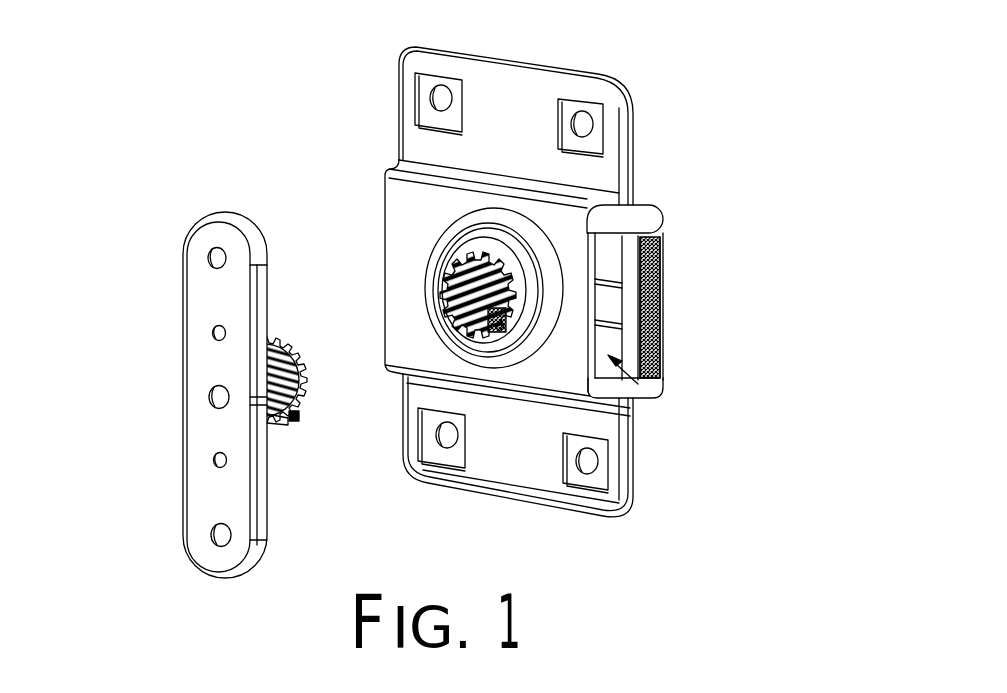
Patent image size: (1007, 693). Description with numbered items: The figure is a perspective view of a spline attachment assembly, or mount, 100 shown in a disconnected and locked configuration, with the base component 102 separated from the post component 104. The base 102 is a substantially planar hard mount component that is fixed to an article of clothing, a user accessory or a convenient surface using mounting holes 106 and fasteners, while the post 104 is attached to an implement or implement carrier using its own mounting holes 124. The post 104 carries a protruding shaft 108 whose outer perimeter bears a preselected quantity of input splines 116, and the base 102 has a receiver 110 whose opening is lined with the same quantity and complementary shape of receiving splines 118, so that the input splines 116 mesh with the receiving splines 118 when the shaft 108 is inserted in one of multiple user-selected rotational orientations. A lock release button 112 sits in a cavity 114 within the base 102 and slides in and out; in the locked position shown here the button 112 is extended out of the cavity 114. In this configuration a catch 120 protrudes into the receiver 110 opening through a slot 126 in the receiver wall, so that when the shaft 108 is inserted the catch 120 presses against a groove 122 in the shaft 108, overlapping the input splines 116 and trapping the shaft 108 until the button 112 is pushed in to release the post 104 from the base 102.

The spline attachment assembly 100 is at (703, 26).
The base component 102 is at (636, 146).
The post component 104 is at (215, 212).
The mounting holes 106 is at (443, 88).
The shaft 108 is at (293, 355).
The receiver 110 is at (433, 251).
The lock release button 112 is at (660, 300).
The cavity 114 is at (652, 395).
The input splines 116 is at (278, 424).
The receiving splines 118 is at (468, 318).
The catch 120 is at (497, 332).
The groove 122 is at (292, 419).
The mounting holes 124 is at (214, 328).
The slots 126 is at (442, 300).